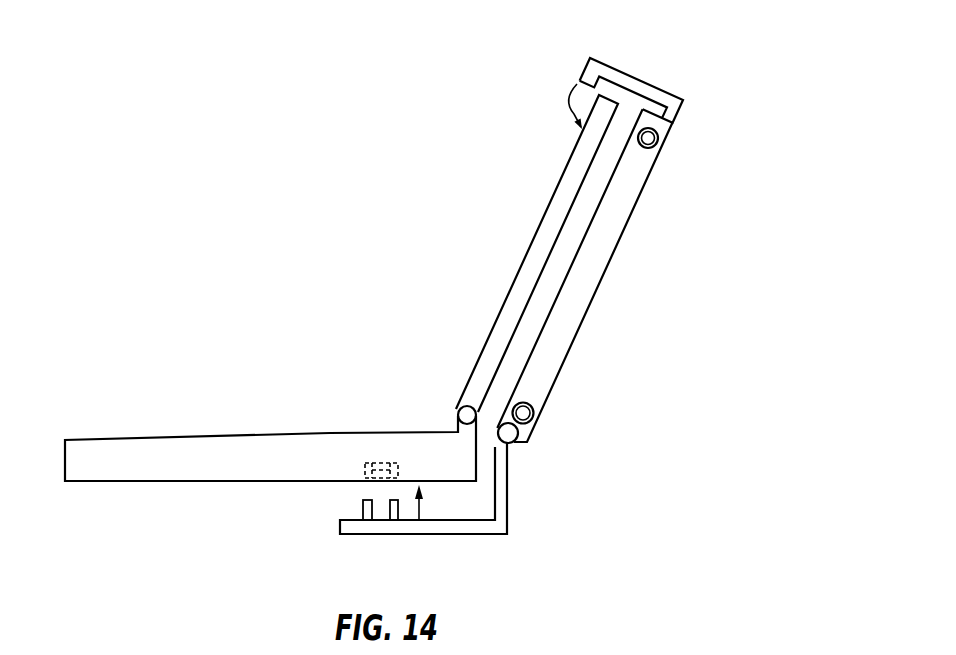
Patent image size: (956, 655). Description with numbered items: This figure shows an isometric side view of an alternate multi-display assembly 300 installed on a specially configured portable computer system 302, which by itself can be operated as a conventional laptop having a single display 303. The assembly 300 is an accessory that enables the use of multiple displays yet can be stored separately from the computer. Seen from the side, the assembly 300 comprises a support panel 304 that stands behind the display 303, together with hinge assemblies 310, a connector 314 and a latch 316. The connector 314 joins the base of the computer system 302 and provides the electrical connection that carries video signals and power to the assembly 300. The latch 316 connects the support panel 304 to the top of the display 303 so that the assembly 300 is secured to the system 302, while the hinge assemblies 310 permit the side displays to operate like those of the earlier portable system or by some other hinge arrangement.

The multi-display assembly 300 is at (712, 137).
The portable computer system 302 is at (122, 438).
The single display 303 is at (537, 231).
The support panel 304 is at (565, 357).
The hinge assembly 310 is at (655, 140).
The connector 314 is at (475, 535).
The latch 316 is at (640, 80).